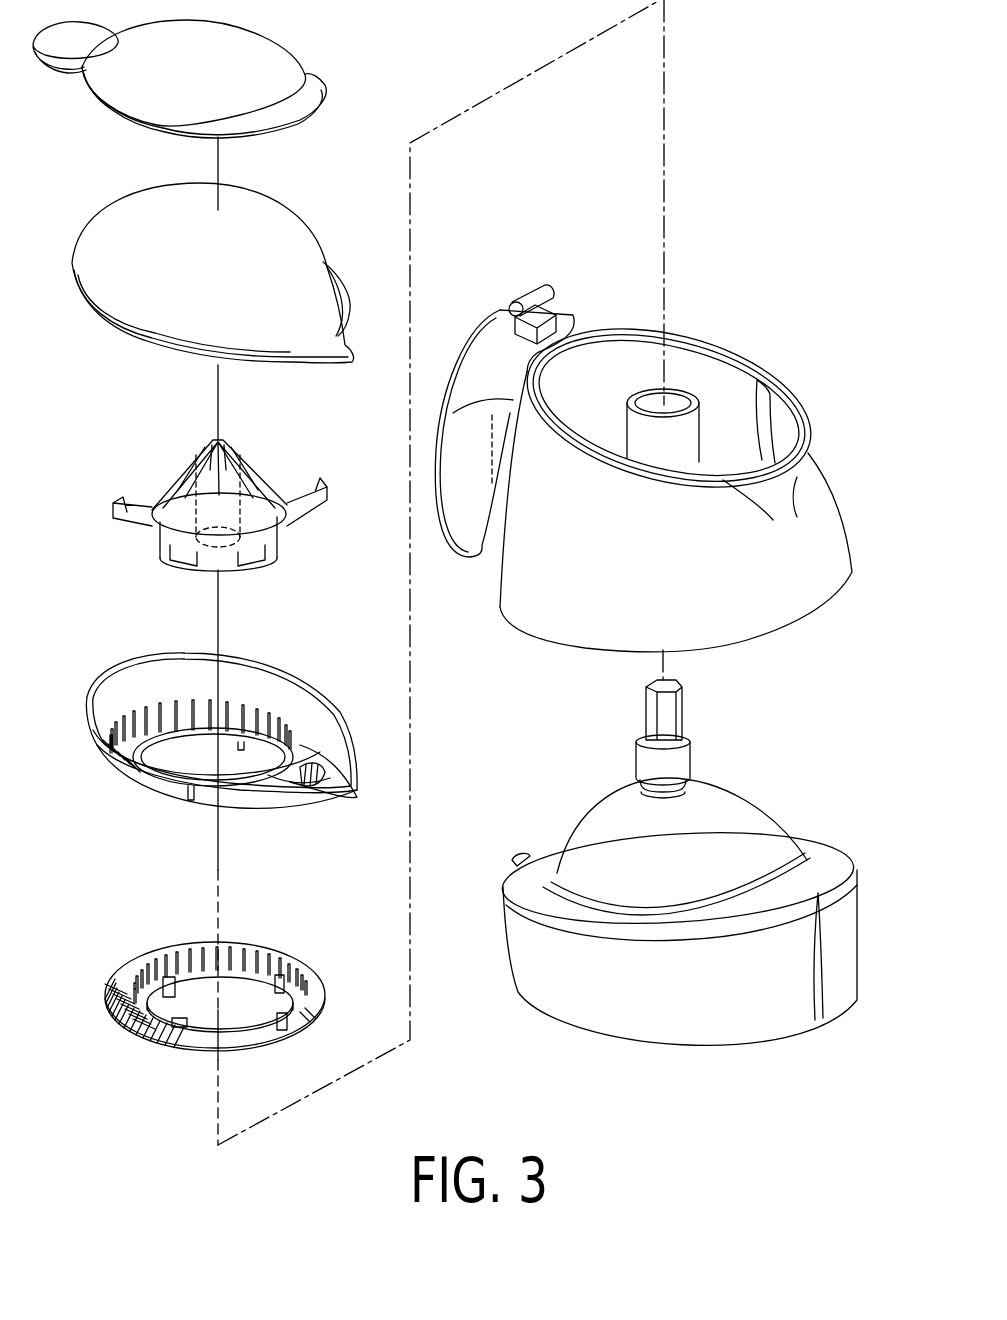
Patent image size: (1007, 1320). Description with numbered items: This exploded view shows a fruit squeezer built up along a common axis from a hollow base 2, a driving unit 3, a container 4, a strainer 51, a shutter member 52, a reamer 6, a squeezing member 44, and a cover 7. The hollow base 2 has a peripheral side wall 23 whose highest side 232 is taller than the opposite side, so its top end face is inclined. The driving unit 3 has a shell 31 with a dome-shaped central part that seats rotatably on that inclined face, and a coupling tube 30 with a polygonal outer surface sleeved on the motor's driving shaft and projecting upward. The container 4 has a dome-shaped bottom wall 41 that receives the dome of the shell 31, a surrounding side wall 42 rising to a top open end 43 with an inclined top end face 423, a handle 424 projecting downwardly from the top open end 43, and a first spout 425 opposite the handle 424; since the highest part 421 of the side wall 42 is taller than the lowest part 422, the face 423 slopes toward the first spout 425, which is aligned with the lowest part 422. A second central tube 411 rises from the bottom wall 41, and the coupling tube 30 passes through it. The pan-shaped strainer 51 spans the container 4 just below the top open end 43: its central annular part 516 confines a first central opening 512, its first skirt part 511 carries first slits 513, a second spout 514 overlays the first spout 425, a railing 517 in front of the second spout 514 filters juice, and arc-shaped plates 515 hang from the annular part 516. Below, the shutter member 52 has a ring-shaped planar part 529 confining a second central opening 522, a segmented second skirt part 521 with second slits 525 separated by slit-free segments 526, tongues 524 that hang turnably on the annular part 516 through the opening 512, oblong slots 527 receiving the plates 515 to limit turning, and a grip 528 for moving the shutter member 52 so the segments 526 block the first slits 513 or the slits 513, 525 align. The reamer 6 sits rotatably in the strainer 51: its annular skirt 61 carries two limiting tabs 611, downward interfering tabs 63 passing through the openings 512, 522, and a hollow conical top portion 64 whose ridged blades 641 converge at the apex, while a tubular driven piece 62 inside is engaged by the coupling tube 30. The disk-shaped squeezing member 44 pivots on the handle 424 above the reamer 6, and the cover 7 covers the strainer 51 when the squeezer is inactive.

The hollow base 2 is at (708, 970).
The peripheral side wall 23 is at (640, 1020).
The highest side 232 is at (830, 987).
The driving unit 3 is at (708, 893).
The coupling tube 30 is at (670, 710).
The shell 31 is at (727, 842).
The container 4 is at (666, 477).
The dome-shaped bottom wall 41 is at (530, 637).
The second central tube 411 is at (690, 437).
The surrounding side wall 42 is at (590, 625).
The highest part 421 is at (567, 370).
The lowest part 422 is at (793, 593).
The inclined top end face 423 is at (722, 348).
The handle 424 is at (483, 370).
The first spout 425 is at (800, 460).
The top open end 43 is at (740, 355).
The squeezing member 44 is at (217, 53).
The strainer 51 is at (285, 731).
The first skirt part 511 is at (258, 798).
The first central opening 512 is at (263, 757).
The first slits 513 is at (158, 710).
The second spout 514 is at (353, 793).
The arc-shaped plates 515 is at (183, 790).
The central annular part 516 is at (302, 760).
The railing 517 is at (320, 775).
The shutter member 52 is at (234, 1005).
The second skirt part 521 is at (307, 973).
The second central opening 522 is at (242, 1028).
The tongues 524 is at (237, 1020).
The second slits 525 is at (177, 962).
The slit-free segments 526 is at (110, 993).
The oblong slots 527 is at (307, 1028).
The grip 528 is at (202, 950).
The ring-shaped planar part 529 is at (207, 1043).
The reamer 6 is at (240, 488).
The annular skirt 61 is at (253, 533).
The limiting tabs 611 is at (122, 497).
The tubular driven piece 62 is at (223, 547).
The interfering tabs 63 is at (165, 553).
The hollow conical top portion 64 is at (222, 440).
The ridged blades 641 is at (245, 498).
The cover 7 is at (270, 232).